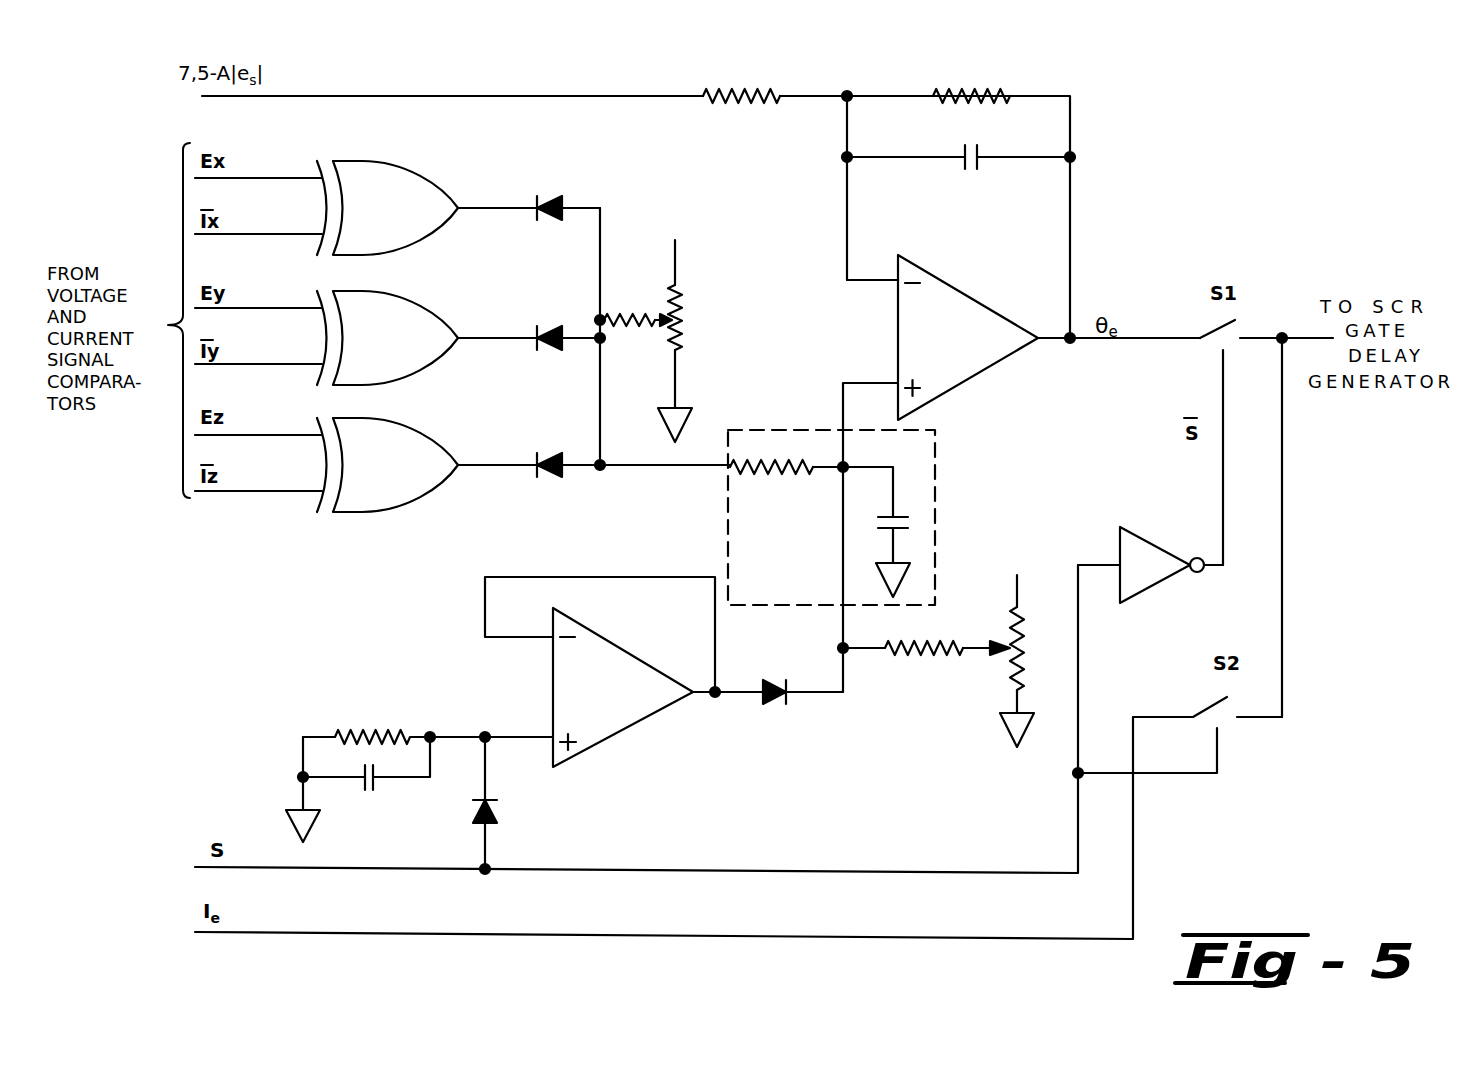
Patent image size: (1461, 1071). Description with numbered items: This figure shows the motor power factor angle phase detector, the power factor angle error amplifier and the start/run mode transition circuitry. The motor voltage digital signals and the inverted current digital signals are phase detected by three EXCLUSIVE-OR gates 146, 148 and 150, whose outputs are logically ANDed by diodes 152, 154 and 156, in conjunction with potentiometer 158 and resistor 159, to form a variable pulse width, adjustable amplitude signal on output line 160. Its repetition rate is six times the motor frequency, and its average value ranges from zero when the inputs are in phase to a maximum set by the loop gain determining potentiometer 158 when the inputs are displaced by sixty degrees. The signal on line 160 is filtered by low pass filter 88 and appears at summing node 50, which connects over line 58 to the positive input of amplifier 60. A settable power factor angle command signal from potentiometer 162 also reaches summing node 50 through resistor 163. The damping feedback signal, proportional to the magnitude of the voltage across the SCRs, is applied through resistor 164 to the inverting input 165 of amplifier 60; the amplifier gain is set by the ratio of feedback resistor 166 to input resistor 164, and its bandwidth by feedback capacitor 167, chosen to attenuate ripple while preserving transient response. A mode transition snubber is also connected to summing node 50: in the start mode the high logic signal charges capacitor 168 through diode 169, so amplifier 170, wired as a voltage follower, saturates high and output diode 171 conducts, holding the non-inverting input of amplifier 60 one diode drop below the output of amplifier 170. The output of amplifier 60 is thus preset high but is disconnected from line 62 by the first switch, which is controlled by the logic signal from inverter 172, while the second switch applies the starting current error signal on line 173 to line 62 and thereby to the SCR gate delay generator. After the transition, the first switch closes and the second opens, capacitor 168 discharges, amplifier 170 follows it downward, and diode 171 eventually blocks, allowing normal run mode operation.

The EXCLUSIVE-OR gate 146 is at (427, 152).
The EXCLUSIVE-OR gate 148 is at (448, 277).
The EXCLUSIVE-OR gate 150 is at (365, 512).
The diode 152 is at (548, 202).
The diode 154 is at (545, 328).
The diode 156 is at (548, 474).
The potentiometer 158 is at (682, 348).
The resistor 159 is at (628, 312).
The output line 160 is at (690, 470).
The potentiometer 162 is at (977, 684).
The resistor 163 is at (935, 655).
The input resistor 164 is at (772, 100).
The inverting input 165 is at (895, 280).
The feedback resistor 166 is at (1005, 100).
The feedback capacitor 167 is at (978, 148).
The capacitor 168 is at (368, 792).
The diode 169 is at (495, 805).
The amplifier 170 is at (652, 708).
The output diode 171 is at (778, 700).
The inverter 172 is at (380, 685).
The line 173 is at (295, 930).
The summing node 50 is at (840, 472).
The line 58 is at (843, 383).
The power factor angle error amplifier 60 is at (985, 310).
The line 62 is at (1282, 338).
The low pass filter 88 is at (935, 487).